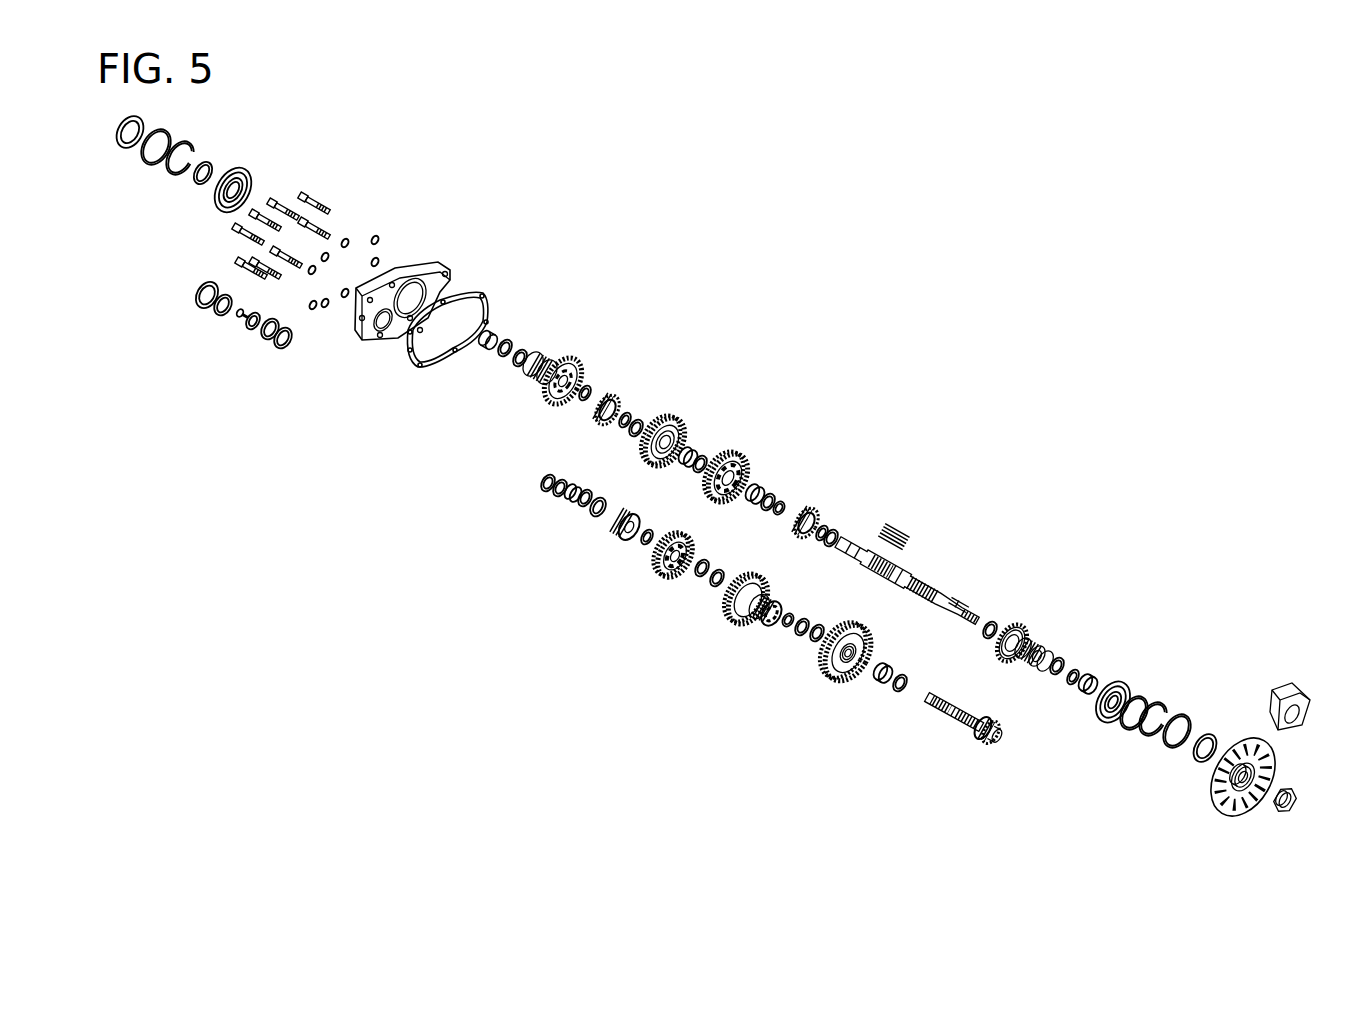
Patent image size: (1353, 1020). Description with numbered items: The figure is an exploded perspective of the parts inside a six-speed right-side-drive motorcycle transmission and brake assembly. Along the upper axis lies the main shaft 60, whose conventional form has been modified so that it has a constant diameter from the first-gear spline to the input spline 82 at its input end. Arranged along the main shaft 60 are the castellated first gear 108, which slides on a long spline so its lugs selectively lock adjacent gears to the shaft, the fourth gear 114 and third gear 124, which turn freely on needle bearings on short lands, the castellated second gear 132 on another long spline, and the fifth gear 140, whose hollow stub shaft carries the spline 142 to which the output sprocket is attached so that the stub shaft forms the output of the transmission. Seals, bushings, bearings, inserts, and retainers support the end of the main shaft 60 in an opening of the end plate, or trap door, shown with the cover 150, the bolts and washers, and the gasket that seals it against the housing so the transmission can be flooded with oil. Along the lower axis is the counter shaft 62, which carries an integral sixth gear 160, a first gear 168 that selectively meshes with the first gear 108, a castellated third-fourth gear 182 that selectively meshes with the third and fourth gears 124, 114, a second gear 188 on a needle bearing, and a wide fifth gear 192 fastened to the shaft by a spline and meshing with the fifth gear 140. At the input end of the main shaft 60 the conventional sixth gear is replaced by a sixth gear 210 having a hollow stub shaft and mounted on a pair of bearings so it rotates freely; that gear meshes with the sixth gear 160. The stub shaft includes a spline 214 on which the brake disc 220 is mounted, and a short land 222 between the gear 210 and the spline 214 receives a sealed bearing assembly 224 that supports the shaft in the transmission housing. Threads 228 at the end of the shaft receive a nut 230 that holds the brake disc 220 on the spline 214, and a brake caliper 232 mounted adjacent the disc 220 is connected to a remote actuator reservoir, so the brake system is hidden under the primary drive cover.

The main shaft 60 is at (899, 535).
The counter shaft 62 is at (927, 709).
The input spline 82 is at (970, 605).
The first gear 108 is at (817, 507).
The fourth gear 114 is at (745, 453).
The third gear 124 is at (673, 417).
The second gear 132 is at (620, 387).
The fifth gear 140 is at (580, 362).
The spline 142 is at (553, 358).
The housing cover 150 is at (413, 267).
The sixth gear 160 is at (985, 752).
The first gear 168 is at (832, 690).
The third-fourth gear 182 is at (740, 623).
The second gear 188 is at (663, 583).
The fifth gear 192 is at (618, 542).
The sixth gear 210 is at (1022, 627).
The spline 214 is at (1037, 643).
The brake disc 220 is at (1217, 812).
The short land 222 is at (1007, 660).
The sealed bearing assembly 224 is at (1232, 733).
The threads 228 is at (1052, 655).
The nut 230 is at (1310, 770).
The brake caliper 232 is at (1307, 707).